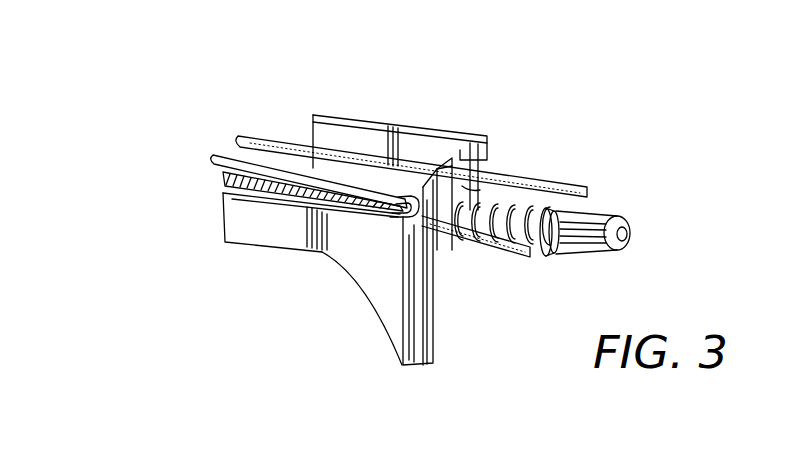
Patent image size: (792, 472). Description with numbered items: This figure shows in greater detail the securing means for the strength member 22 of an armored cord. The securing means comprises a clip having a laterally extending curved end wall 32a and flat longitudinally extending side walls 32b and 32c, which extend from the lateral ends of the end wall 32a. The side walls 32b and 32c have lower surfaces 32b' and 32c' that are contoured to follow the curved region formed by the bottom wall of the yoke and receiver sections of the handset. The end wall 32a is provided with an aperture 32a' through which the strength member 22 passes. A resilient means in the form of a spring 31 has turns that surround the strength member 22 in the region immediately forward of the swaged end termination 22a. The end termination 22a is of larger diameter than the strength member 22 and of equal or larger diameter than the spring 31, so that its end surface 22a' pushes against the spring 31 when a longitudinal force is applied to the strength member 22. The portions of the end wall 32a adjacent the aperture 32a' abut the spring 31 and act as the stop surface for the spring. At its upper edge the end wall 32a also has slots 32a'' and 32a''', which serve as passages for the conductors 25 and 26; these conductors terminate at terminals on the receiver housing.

The strength member 22 is at (543, 243).
The swaged end termination 22a is at (660, 217).
The end surface 22a' is at (605, 209).
The conductor 25 is at (490, 228).
The conductor 26 is at (535, 190).
The spring 31 is at (492, 243).
The curved end wall 32a is at (452, 276).
The aperture 32a' is at (506, 164).
The slot 32a'' is at (380, 226).
The slot 32a''' is at (494, 166).
The side wall 32b is at (271, 212).
The lower surface 32b' is at (302, 308).
The side wall 32c is at (400, 120).
The lower surface 32c' is at (309, 140).